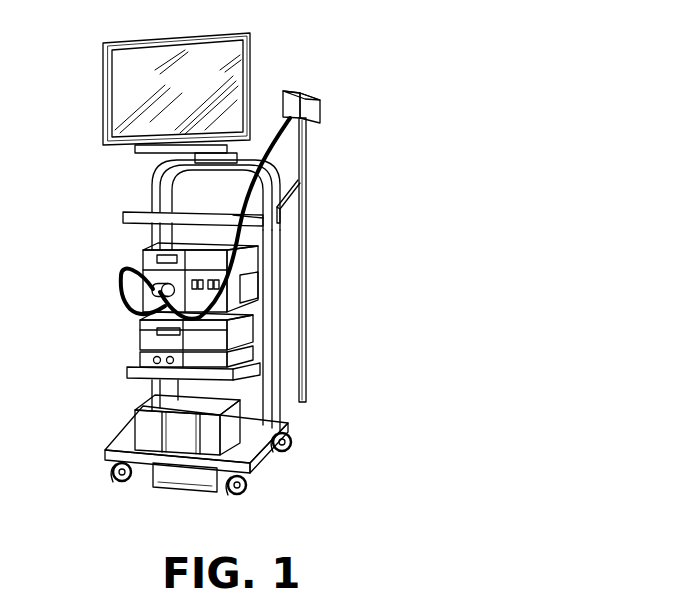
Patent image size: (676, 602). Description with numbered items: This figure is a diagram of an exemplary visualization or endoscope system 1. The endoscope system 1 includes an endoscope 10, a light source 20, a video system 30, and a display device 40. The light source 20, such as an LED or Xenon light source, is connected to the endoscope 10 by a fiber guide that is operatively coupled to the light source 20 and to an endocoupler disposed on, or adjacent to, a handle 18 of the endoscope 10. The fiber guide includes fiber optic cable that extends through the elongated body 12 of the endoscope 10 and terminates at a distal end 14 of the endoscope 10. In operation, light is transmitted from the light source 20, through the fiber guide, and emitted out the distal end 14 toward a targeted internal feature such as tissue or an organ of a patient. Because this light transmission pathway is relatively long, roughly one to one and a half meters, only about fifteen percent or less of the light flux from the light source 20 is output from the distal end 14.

The endoscope system 1 is at (286, 40).
The endoscope 10 is at (543, 243).
The elongated body 12 is at (399, 280).
The distal end 14 is at (308, 400).
The handle 18 is at (342, 113).
The light source 20 is at (118, 300).
The video system 30 is at (140, 258).
The display device 40 is at (103, 72).